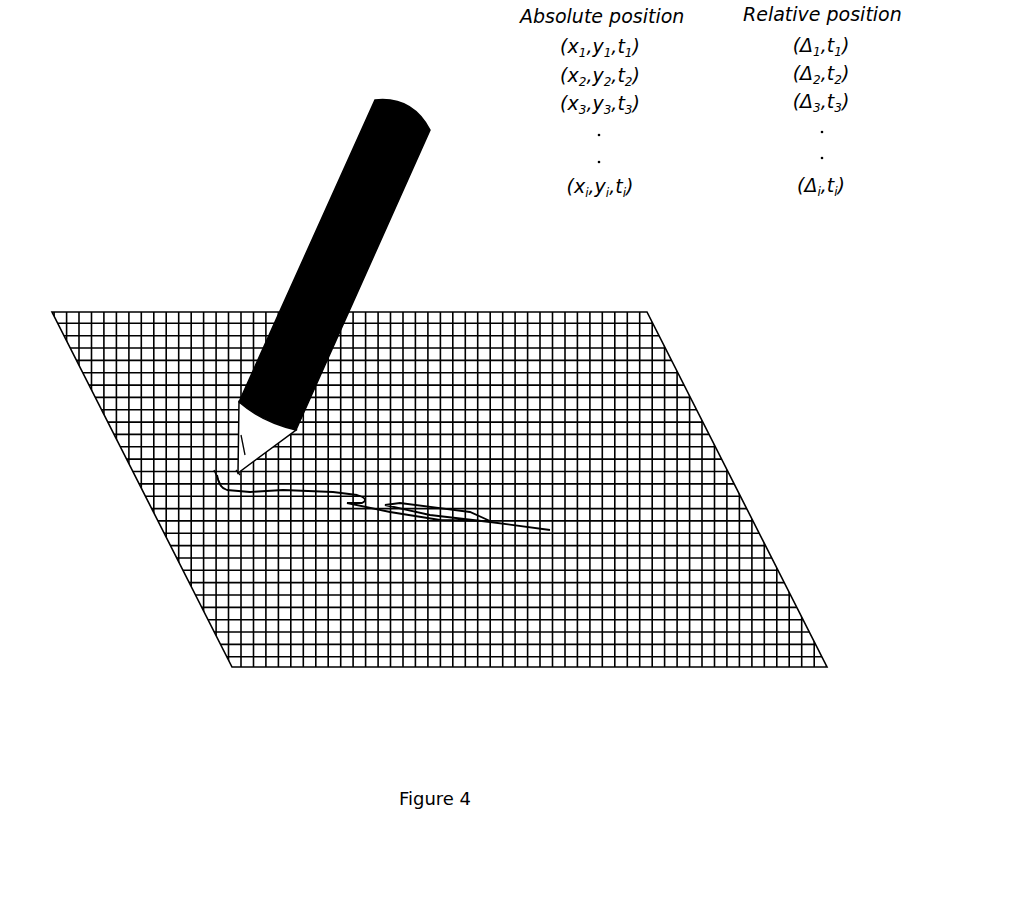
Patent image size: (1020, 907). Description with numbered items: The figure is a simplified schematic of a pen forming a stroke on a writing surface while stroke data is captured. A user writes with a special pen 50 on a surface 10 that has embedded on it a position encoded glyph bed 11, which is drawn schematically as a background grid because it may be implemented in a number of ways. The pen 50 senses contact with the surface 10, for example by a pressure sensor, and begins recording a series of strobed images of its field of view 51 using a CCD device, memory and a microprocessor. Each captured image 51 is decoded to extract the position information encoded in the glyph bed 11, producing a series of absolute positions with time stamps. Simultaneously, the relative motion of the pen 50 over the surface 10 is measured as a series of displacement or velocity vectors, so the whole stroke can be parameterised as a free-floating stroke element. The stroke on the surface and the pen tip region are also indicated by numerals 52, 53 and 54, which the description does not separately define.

The surface 10 is at (297, 668).
The position encoded glyph bed 11 is at (205, 552).
The pen 50 is at (320, 220).
The field of view 51 is at (208, 462).
The handwritten trace 52 is at (353, 495).
The pen tip cone 53 is at (232, 460).
The pen nib / writing point 54 is at (237, 473).